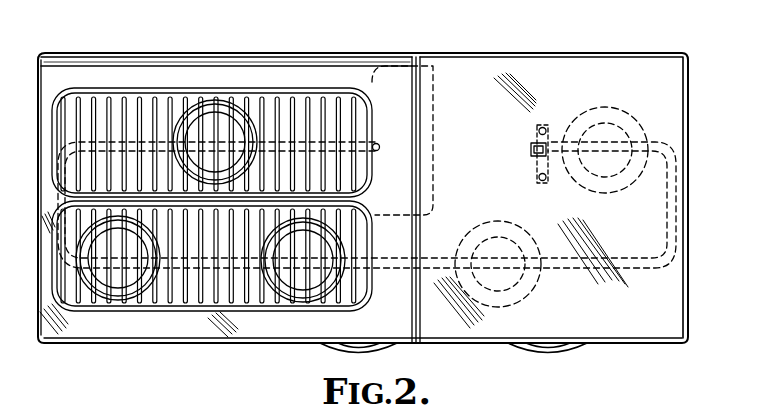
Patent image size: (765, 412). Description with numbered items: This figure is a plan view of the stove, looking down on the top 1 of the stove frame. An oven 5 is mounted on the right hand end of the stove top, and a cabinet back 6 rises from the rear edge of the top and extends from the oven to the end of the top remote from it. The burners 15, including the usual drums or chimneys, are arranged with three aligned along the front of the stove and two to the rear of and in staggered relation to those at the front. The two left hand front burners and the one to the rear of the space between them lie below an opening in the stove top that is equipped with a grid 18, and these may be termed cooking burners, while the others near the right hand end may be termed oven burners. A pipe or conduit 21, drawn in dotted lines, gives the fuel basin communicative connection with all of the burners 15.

The top 1 is at (164, 327).
The oven 5 is at (596, 78).
The cabinet back 6 is at (244, 65).
The burners 15 is at (116, 282).
The grid 18 is at (219, 290).
The pipe or conduit 21 is at (331, 97).